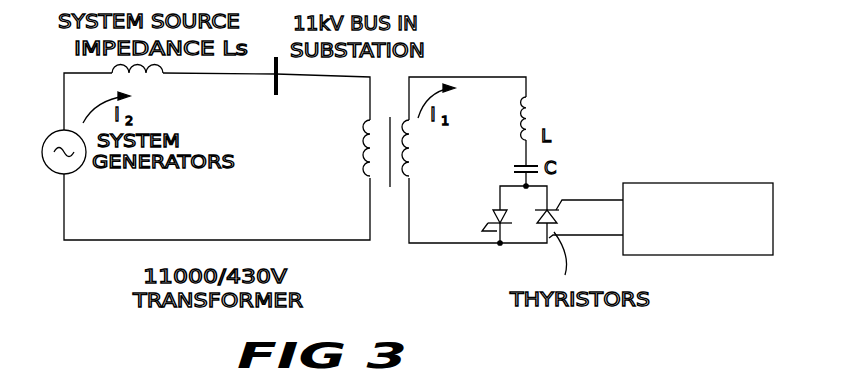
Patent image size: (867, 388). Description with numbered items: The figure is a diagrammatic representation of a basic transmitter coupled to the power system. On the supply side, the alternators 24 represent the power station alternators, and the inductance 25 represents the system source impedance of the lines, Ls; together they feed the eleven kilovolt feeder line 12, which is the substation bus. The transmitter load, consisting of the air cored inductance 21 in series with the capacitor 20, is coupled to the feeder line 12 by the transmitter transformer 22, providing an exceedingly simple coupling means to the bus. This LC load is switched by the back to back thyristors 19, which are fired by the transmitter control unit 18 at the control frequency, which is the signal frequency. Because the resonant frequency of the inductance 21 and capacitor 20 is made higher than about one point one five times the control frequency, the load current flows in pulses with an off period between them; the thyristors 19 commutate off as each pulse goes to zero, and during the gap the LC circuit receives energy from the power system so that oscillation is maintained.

The feeder line 12 is at (245, 77).
The transmitter control unit 18 is at (703, 188).
The thyristors 19 is at (492, 217).
The capacitor 20 is at (513, 169).
The inductance 21 is at (536, 115).
The transmitter transformer 22 is at (364, 157).
The alternators 24 is at (50, 170).
The system source impedance 25 is at (149, 78).